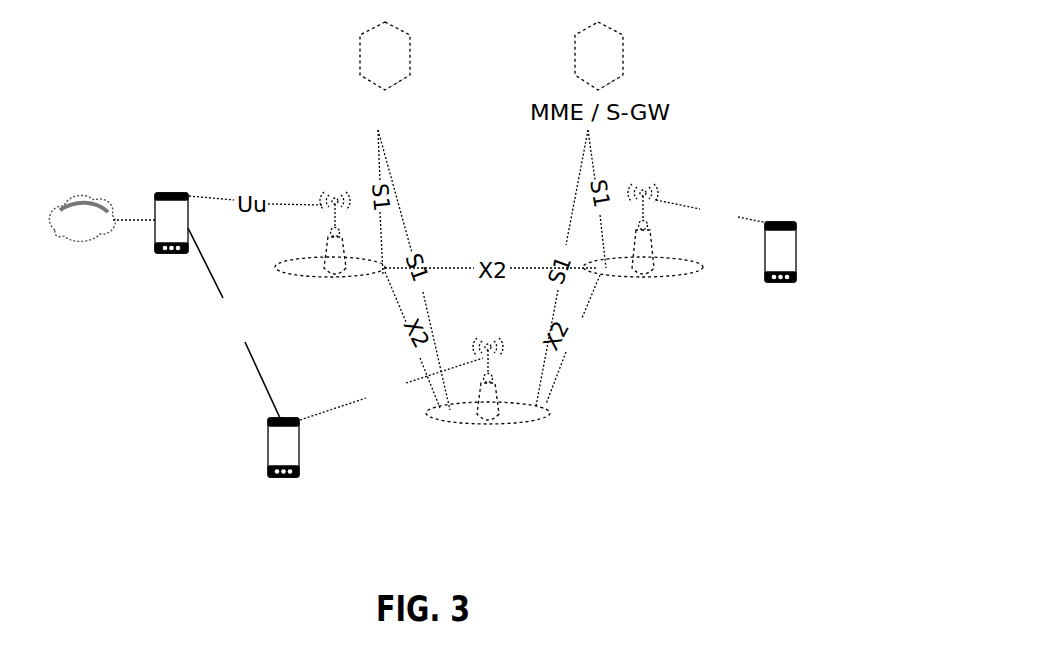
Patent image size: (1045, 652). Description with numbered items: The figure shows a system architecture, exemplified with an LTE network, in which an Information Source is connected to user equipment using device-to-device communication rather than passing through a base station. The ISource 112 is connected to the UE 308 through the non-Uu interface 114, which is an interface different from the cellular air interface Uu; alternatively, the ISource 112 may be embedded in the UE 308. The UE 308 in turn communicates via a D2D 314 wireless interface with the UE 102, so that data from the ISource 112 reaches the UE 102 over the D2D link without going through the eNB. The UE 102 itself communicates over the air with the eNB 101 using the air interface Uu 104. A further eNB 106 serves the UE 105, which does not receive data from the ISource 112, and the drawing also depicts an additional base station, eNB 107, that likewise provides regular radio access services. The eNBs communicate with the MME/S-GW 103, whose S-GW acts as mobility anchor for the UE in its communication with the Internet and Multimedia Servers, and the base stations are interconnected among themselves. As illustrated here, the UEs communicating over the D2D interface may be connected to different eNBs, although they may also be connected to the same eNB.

The eNB 101 is at (463, 431).
The UE 102 is at (280, 486).
The MME/S-GW 103 is at (343, 50).
The air interface Uu 104 is at (364, 410).
The UE 105 is at (775, 212).
The eNB 106 is at (608, 294).
The eNB base station 107 is at (300, 288).
The Information Source (ISource) 112 is at (62, 240).
The non-Uu interface 114 is at (131, 207).
The UE 308 is at (161, 180).
The D2D wireless interface 314 is at (250, 392).